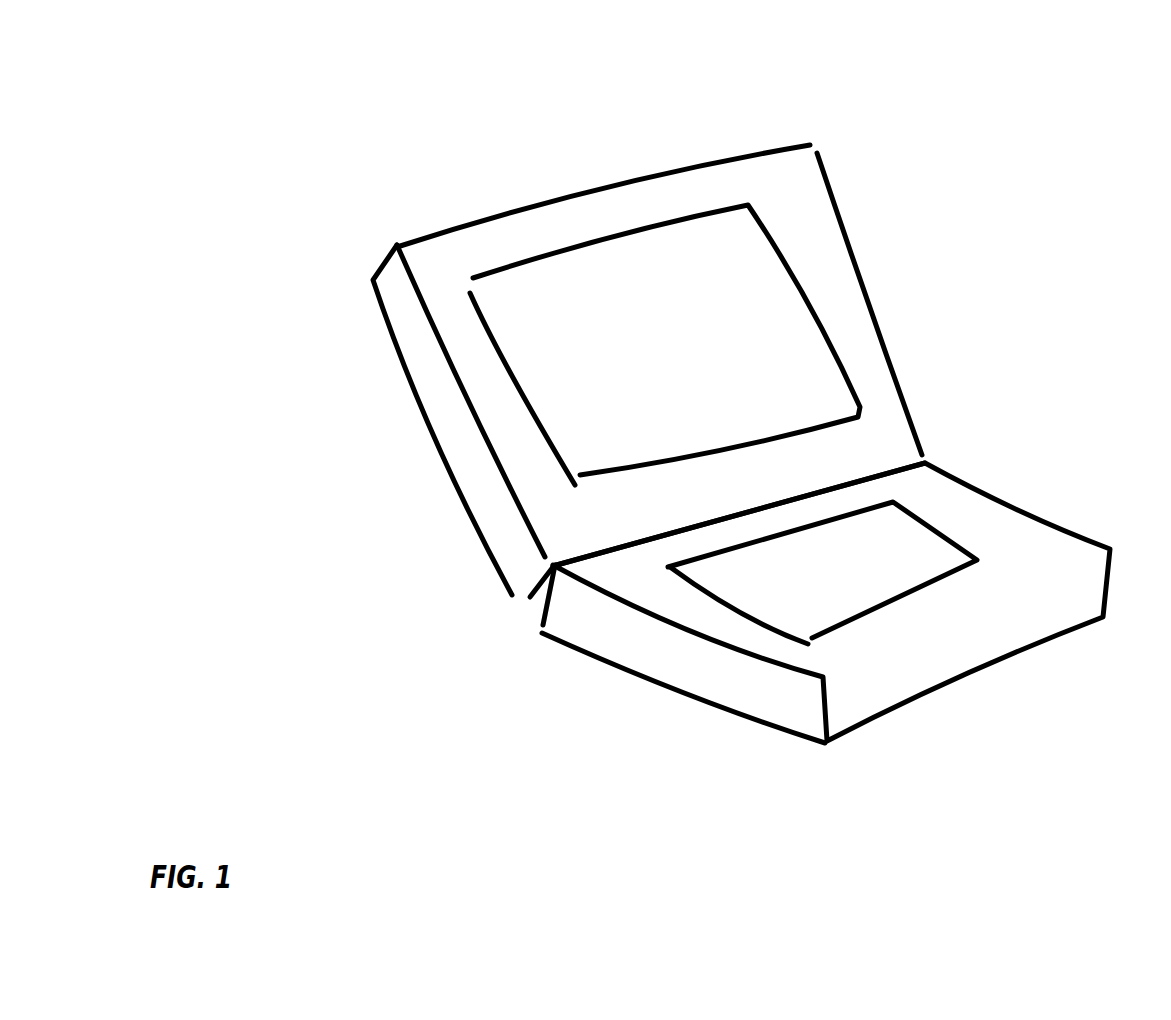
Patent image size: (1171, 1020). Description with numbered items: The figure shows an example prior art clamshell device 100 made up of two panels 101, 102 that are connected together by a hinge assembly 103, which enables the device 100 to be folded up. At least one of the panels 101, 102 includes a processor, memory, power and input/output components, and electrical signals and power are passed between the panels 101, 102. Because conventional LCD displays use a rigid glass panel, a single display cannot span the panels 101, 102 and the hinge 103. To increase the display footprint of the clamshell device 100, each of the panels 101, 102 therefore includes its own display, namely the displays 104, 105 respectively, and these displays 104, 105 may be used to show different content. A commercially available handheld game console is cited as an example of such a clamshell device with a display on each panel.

The clamshell device 100 is at (355, 153).
The panel 101 is at (840, 210).
The panel 102 is at (962, 477).
The hinge assembly 103 is at (930, 453).
The display 104 is at (500, 377).
The display 105 is at (690, 597).